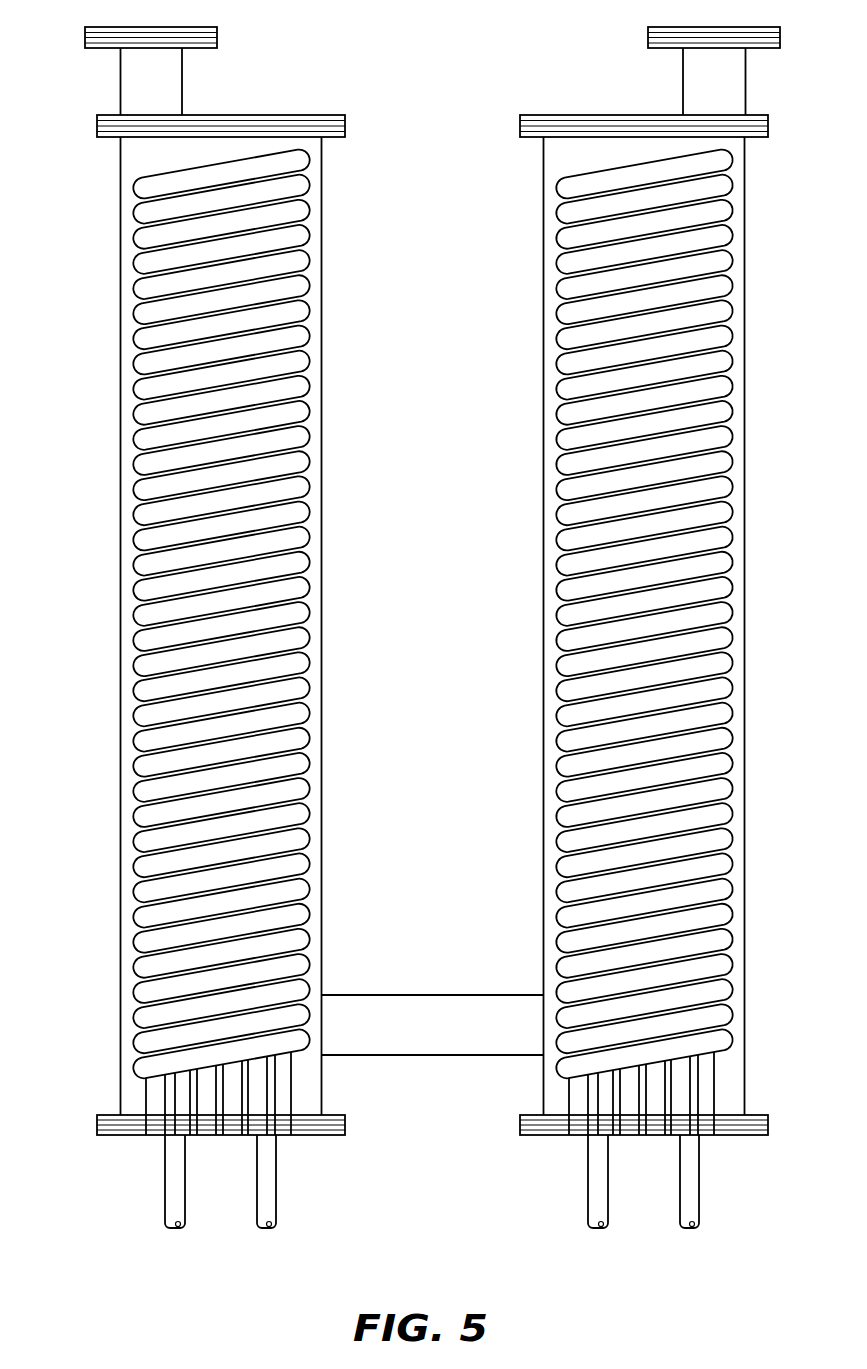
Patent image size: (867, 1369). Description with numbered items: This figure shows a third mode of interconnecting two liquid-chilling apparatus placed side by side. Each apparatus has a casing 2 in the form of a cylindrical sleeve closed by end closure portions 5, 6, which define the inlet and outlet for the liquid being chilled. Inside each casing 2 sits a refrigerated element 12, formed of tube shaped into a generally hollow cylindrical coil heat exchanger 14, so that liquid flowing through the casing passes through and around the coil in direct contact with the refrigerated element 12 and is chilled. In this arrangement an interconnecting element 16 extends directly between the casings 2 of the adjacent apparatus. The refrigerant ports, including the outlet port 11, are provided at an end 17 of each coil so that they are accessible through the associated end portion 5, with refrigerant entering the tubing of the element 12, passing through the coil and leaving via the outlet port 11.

The casing 2 is at (120, 617).
The end closure portion 5 is at (115, 1136).
The end closure portion 6 is at (327, 115).
The refrigerant outlet port 11 is at (262, 1120).
The refrigerated element 12 is at (168, 1122).
The coil heat exchanger 14 is at (155, 288).
The interconnecting element 16 is at (446, 995).
The end of coil 17 is at (182, 1062).